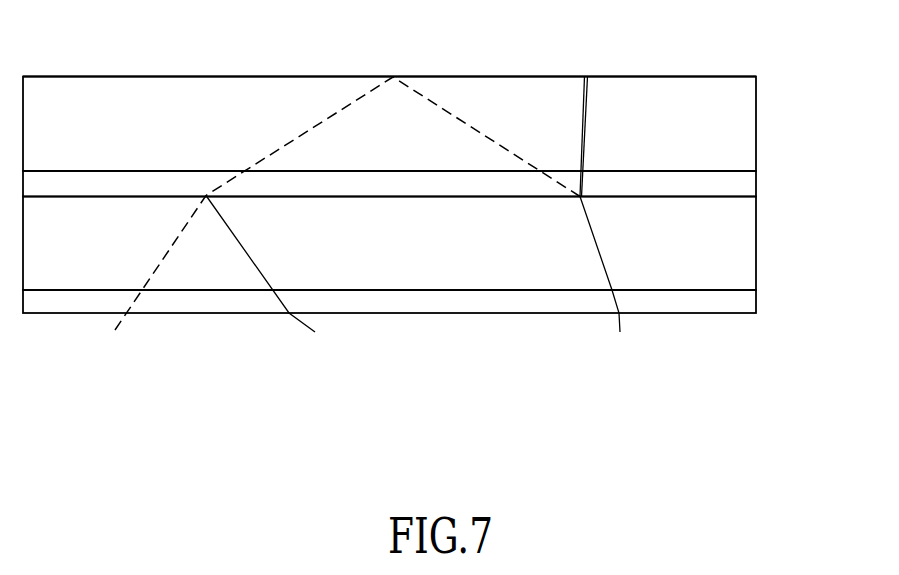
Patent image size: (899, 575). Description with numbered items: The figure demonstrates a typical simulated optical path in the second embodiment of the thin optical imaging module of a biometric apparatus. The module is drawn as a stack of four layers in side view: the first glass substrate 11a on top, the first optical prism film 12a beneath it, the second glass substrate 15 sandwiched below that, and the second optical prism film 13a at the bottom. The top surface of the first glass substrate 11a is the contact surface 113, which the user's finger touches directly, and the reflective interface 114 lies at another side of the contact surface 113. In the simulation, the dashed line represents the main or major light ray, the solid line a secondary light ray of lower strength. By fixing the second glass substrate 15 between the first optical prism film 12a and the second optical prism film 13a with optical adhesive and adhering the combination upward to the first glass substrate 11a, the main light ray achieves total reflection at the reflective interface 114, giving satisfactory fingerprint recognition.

The contact surface 113 is at (723, 77).
The reflective interface 114 is at (667, 83).
The first glass substrate 11a is at (742, 128).
The first optical prism film 12a is at (745, 187).
The second glass substrate 15 is at (742, 262).
The second optical prism film 13a is at (743, 305).